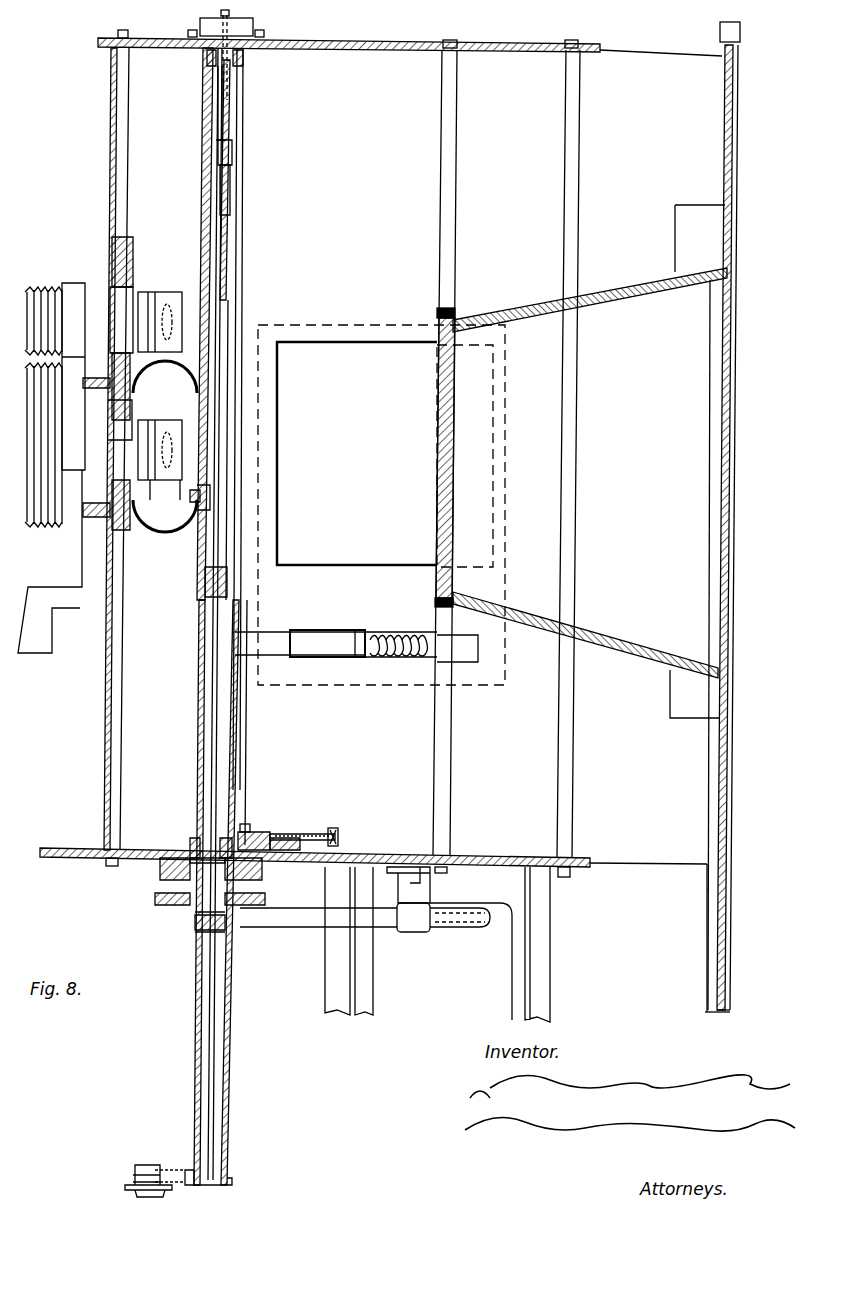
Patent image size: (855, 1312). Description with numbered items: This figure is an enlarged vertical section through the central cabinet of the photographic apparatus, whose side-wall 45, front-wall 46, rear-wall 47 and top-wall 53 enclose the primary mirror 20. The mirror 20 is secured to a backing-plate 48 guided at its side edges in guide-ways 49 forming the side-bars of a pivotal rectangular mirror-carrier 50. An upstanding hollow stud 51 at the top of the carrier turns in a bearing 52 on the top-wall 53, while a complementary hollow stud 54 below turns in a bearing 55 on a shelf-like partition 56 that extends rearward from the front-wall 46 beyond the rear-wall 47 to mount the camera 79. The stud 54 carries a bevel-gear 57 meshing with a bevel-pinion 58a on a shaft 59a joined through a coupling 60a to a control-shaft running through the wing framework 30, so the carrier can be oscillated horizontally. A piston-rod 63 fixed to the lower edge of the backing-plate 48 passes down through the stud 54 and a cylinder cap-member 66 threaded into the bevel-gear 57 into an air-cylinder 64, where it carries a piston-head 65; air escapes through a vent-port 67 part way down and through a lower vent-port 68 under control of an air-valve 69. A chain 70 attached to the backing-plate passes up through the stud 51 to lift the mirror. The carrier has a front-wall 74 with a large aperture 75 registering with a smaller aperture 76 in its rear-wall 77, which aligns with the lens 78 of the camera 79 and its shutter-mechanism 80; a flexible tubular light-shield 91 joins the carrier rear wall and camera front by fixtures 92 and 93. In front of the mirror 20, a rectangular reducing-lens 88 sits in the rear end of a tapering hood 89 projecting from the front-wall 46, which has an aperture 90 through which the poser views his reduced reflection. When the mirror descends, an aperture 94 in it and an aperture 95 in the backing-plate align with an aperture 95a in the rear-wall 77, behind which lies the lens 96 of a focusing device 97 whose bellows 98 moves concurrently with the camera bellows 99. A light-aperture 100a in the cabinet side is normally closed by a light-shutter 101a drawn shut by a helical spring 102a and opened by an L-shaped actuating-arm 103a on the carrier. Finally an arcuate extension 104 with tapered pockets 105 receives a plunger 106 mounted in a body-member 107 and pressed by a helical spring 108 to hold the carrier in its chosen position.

The central or primary mirror 20 is at (237, 190).
The framework 30 is at (553, 957).
The side-wall 45 is at (625, 850).
The front-wall 46 is at (732, 236).
The rear-wall 47 is at (105, 690).
The backing-plate 48 is at (220, 178).
The guide-ways 49 is at (213, 151).
The mirror-carrier 50 is at (242, 125).
The hollow stud 51 is at (243, 62).
The bearing 52 is at (253, 25).
The top-wall 53 is at (330, 50).
The hollow stud 54 is at (192, 840).
The bearing 55 is at (190, 855).
The shelf-like partition 56 is at (140, 864).
The bevel-gear 57 is at (155, 902).
The bevel-pinion 58a is at (257, 933).
The shaft 59a is at (386, 928).
The coupling 60a is at (457, 930).
The piston-rod 63 is at (202, 785).
The air-cylinder 64 is at (200, 1038).
The piston-head 65 is at (190, 934).
The cylinder cap-member 66 is at (190, 918).
The vent-port 67 is at (188, 995).
The vent-port 68 is at (192, 1170).
The air-valve 69 is at (138, 1175).
The chain 70 is at (220, 14).
The front-wall 74 is at (242, 237).
The aperture 75 is at (243, 287).
The aperture 76 is at (198, 517).
The rear-wall 77 is at (197, 575).
The lens 78 is at (174, 488).
The camera 79 is at (50, 525).
The shutter-mechanism 80 is at (150, 540).
The reducing-lens 88 is at (439, 459).
The hood 89 is at (602, 645).
The aperture 90 is at (730, 316).
The light-shield 91 is at (168, 532).
The fixture 92 is at (192, 395).
The fixture 93 is at (137, 405).
The aperture 94 is at (237, 311).
The aperture 95 is at (202, 295).
The aperture 95a is at (183, 303).
The lens 96 is at (170, 354).
The focusing device 97 is at (80, 282).
The flexible bellows 98 is at (48, 287).
The flexible bellows 99 is at (41, 368).
The light-aperture 100a is at (375, 345).
The light-shutter 101a is at (357, 453).
The helical spring 102a is at (415, 625).
The L-shaped actuating-arm 103a is at (340, 625).
The arcuate extension 104 is at (255, 830).
The tapered pockets 105 is at (252, 825).
The plunger 106 is at (275, 838).
The body-member 107 is at (300, 834).
The helical spring 108 is at (330, 828).